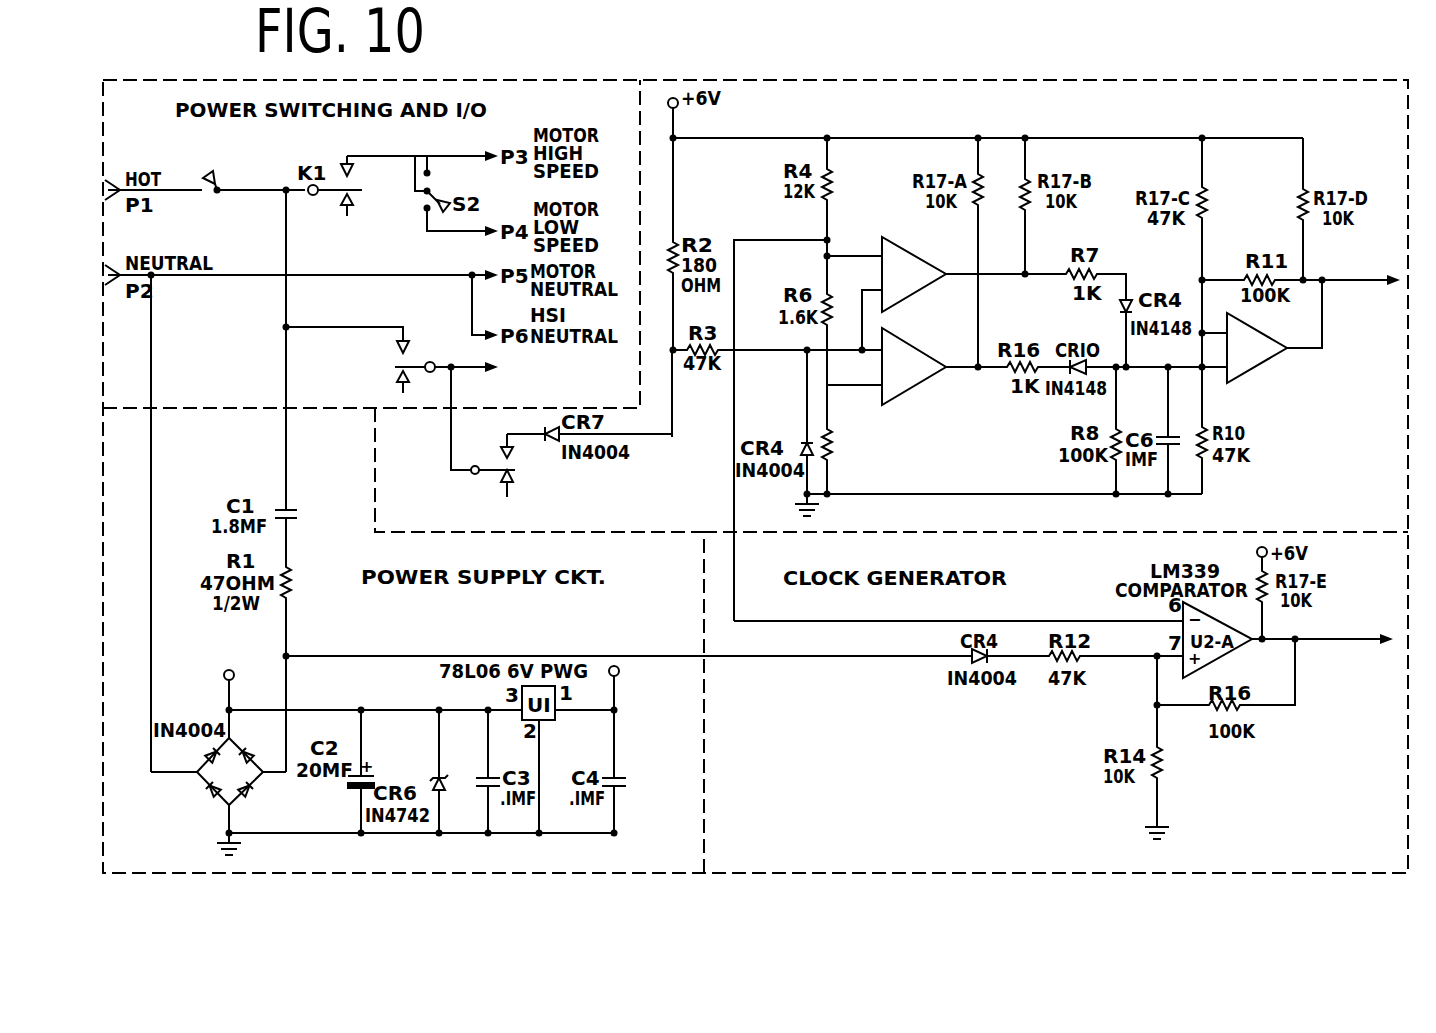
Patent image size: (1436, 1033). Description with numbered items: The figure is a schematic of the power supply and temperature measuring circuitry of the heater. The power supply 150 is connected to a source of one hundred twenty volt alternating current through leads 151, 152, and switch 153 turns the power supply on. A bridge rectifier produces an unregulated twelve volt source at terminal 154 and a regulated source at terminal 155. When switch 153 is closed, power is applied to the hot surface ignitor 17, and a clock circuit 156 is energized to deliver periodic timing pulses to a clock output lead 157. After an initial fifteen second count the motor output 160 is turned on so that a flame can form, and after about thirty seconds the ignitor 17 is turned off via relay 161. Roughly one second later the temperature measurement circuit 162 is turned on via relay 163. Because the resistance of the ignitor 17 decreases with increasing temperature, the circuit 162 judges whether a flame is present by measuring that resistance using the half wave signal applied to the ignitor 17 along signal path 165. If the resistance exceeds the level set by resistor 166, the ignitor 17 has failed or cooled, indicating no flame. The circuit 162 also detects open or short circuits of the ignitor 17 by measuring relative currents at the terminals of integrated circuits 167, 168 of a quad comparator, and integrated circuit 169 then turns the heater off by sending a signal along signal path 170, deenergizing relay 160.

The power supply 150 is at (110, 665).
The lead 151 is at (153, 313).
The lead 152 is at (283, 295).
The switch 153 is at (200, 190).
The terminal 154 is at (235, 672).
The terminal 155 is at (620, 680).
The clock circuit 156 is at (1388, 773).
The clock output lead 157 is at (1355, 647).
The motor output relay 160 is at (340, 178).
The relay 161 is at (413, 340).
The temperature measurement circuit 162 is at (1316, 104).
The relay 163 is at (486, 482).
The signal path 165 is at (348, 328).
The resistor 166 is at (828, 428).
The integrated circuit 167 is at (898, 250).
The integrated circuit 168 is at (912, 381).
The integrated circuit 169 is at (1258, 374).
The signal path 170 is at (1348, 286).
The hot surface ignitor 17 is at (497, 371).